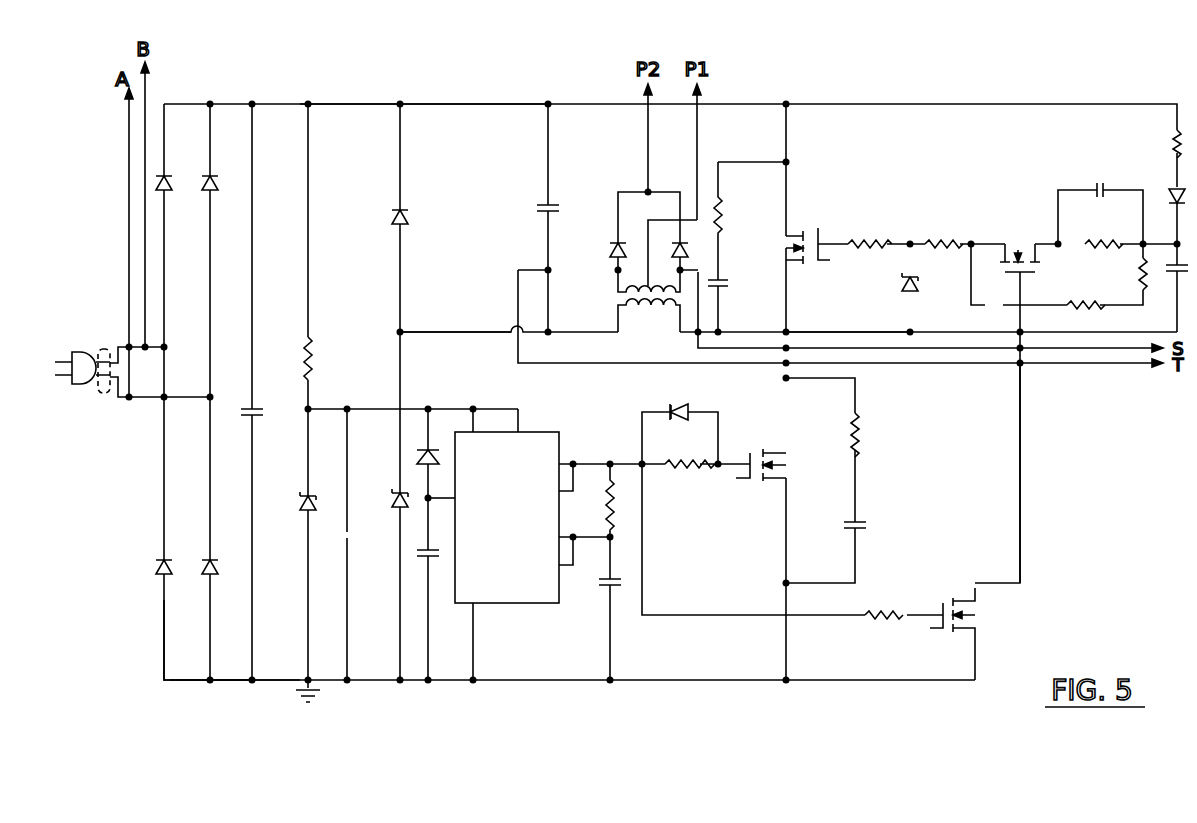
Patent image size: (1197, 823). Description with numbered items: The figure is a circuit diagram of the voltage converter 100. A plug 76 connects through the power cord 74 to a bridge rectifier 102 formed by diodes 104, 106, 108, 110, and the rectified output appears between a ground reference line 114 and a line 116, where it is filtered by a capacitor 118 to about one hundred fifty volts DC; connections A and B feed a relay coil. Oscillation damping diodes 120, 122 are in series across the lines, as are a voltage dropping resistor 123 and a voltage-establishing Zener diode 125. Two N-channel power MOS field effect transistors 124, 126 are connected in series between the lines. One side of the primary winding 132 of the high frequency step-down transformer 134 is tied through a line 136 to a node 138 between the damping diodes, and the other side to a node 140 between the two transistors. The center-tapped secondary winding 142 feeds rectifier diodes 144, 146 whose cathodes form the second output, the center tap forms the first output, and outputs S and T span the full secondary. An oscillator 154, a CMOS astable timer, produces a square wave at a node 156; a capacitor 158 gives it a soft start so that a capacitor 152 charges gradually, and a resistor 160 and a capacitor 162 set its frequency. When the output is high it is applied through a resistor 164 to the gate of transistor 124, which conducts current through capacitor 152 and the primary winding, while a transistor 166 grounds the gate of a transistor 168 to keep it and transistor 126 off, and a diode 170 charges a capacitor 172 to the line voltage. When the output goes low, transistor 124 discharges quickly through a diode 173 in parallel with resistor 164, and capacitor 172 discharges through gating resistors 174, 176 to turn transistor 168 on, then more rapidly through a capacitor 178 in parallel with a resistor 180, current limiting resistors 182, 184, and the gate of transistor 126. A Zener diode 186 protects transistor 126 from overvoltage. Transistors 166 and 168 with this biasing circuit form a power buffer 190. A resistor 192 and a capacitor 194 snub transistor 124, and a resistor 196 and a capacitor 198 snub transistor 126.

The power cord 74 is at (105, 349).
The plug 76 is at (74, 384).
The voltage converter 100 is at (369, 90).
The bridge rectifier 102 is at (150, 626).
The diode 104 is at (157, 565).
The diode 106 is at (203, 563).
The diode 108 is at (170, 178).
The diode 110 is at (215, 178).
The ground reference line 114 is at (232, 683).
The line 116 is at (513, 104).
The capacitor 118 is at (261, 406).
The oscillation damping diode 120 is at (392, 218).
The oscillation damping diode 122 is at (395, 498).
The voltage dropping resistor 123 is at (318, 345).
The N-channel power MOS field effect transistor 124 is at (756, 486).
The Zener diode 125 is at (288, 530).
The N-channel power MOS field effect transistor 126 is at (818, 229).
The primary winding 132 is at (673, 411).
The high frequency step-down transformer 134 is at (641, 326).
The line 136 is at (487, 330).
The node 138 is at (400, 333).
The node 140 is at (790, 330).
The center-tapped secondary winding 142 is at (638, 250).
The rectifier diode 144 is at (613, 272).
The rectifier diode 146 is at (694, 250).
The capacitor 152 is at (553, 205).
The oscillator 154 is at (510, 592).
The node 156 is at (608, 462).
The capacitor 158 is at (437, 557).
The resistor 160 is at (614, 507).
The capacitor 162 is at (606, 588).
The resistor 164 is at (683, 470).
The N-channel power MOS field effect transistor 166 is at (977, 606).
The N-channel power MOS field effect transistor 168 is at (1018, 248).
The diode 170 is at (1170, 186).
The capacitor 172 is at (1172, 274).
The diode 173 is at (690, 424).
The gating resistor 174 is at (1141, 288).
The gating resistor 176 is at (1073, 312).
The capacitor 178 is at (1098, 183).
The resistor 180 is at (1105, 252).
The current limiting resistor 182 is at (949, 238).
The current limiting resistor 184 is at (884, 232).
The Zener diode 186 is at (920, 292).
The power buffer 190 is at (1055, 461).
The resistor 192 is at (860, 425).
The capacitor 194 is at (864, 530).
The resistor 196 is at (724, 212).
The capacitor 198 is at (728, 292).